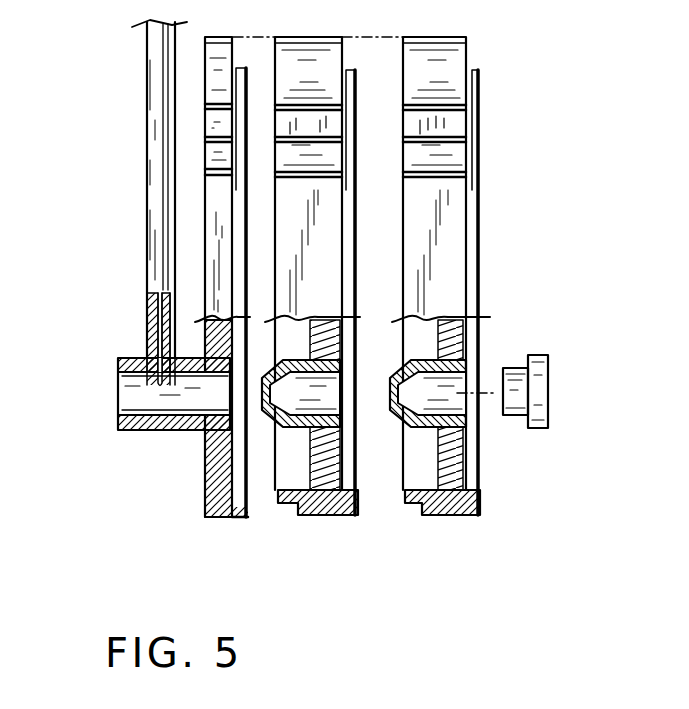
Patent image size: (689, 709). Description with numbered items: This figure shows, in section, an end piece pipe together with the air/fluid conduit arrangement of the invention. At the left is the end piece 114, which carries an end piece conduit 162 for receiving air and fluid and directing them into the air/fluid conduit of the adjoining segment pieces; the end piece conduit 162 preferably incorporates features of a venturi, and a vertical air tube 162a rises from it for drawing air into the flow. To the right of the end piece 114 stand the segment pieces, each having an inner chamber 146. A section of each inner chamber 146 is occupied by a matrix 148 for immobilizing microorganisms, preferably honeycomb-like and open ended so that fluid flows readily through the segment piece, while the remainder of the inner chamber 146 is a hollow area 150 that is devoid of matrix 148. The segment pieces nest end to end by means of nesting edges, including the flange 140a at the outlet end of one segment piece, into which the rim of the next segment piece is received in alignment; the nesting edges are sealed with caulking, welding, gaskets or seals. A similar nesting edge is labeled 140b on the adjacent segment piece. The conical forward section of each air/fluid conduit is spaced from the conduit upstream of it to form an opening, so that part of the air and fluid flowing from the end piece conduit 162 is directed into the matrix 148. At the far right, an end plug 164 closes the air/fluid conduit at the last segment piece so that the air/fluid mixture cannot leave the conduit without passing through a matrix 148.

The end piece 114 is at (212, 482).
The flange 140a is at (366, 512).
The cylinder 140b is at (283, 507).
The inner chamber 146 is at (247, 450).
The matrix 148 is at (455, 470).
The hollow area 150 is at (292, 476).
The end piece conduit 162 is at (118, 430).
The air tube 162a is at (148, 289).
The end plug 164 is at (548, 372).